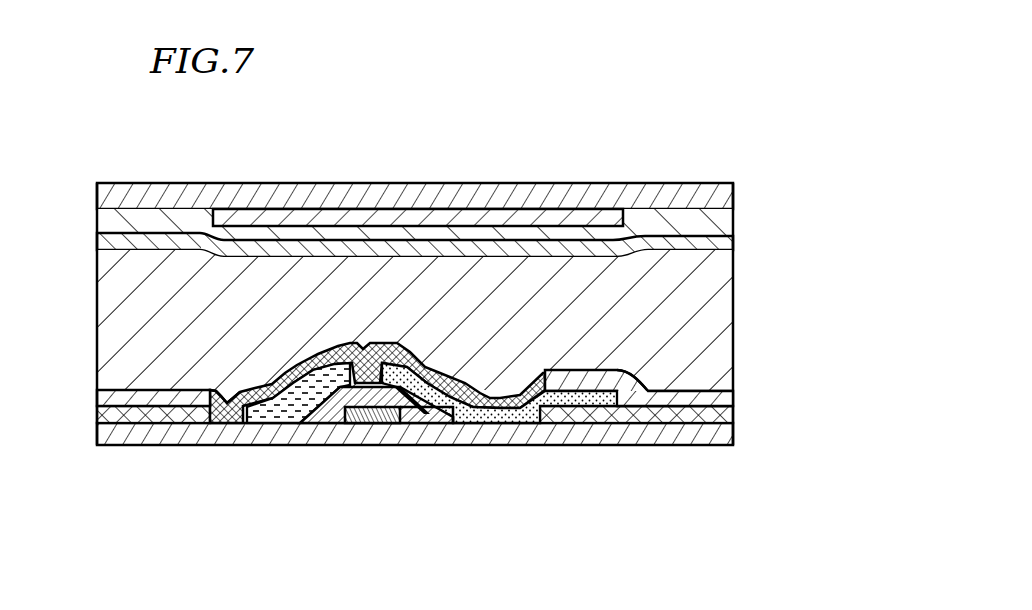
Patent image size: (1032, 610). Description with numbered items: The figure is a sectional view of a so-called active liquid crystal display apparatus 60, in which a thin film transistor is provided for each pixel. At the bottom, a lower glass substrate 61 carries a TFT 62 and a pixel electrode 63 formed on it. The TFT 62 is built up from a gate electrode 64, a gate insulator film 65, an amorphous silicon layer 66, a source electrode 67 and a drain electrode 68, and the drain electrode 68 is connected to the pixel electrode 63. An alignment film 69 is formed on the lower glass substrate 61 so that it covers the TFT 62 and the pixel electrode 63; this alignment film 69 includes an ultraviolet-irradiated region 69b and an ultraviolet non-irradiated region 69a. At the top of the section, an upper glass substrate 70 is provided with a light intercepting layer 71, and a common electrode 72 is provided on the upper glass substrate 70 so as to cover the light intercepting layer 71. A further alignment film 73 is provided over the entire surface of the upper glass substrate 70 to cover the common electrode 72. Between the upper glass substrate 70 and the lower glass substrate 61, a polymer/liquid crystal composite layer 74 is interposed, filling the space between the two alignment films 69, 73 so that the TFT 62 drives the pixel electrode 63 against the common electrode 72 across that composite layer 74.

The active liquid crystal display apparatus 60 is at (392, 305).
The lower glass substrate 61 is at (133, 440).
The TFT 62 is at (432, 464).
The pixel electrode 63 is at (417, 467).
The gate electrode 64 is at (372, 456).
The gate insulator film 65 is at (432, 428).
The amorphous silicon layer 66 is at (453, 422).
The source electrode 67 is at (272, 420).
The drain electrode 68 is at (530, 426).
The alignment film 69 is at (390, 438).
The ultraviolet non-irradiated region 69a is at (228, 412).
The ultraviolet-irradiated region 69b is at (180, 415).
The upper glass substrate 70 is at (172, 190).
The light intercepting layer 71 is at (250, 213).
The common electrode 72 is at (412, 243).
The alignment film 73 is at (643, 243).
The polymer/liquid crystal composite layer 74 is at (686, 330).